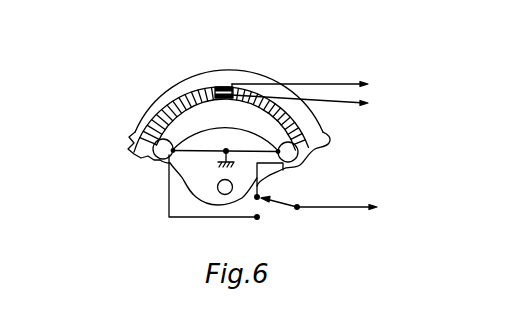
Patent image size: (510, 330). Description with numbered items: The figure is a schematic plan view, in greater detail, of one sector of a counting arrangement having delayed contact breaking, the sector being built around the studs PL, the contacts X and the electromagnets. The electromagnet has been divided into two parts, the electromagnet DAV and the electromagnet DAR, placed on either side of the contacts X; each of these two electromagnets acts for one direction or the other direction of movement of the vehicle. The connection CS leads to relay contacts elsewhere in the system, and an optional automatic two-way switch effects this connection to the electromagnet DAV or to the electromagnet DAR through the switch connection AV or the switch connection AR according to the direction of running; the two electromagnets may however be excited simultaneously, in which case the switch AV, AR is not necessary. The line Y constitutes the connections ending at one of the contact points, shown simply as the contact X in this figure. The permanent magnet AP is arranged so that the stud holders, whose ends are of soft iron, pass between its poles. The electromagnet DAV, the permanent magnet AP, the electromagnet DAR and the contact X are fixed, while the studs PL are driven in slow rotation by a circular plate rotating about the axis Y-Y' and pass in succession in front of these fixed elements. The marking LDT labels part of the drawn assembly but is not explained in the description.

The studs PL is at (177, 107).
The contacts X is at (224, 87).
The line Y is at (309, 95).
The linear displacement transducer LDT is at (143, 113).
The permanent magnet AP is at (278, 128).
The electromagnet DAV is at (159, 156).
The axis Y-Y' is at (224, 166).
The switch connection AR is at (277, 196).
The electromagnet DAR is at (293, 173).
The switch connection AV is at (226, 194).
The connection CS is at (349, 209).